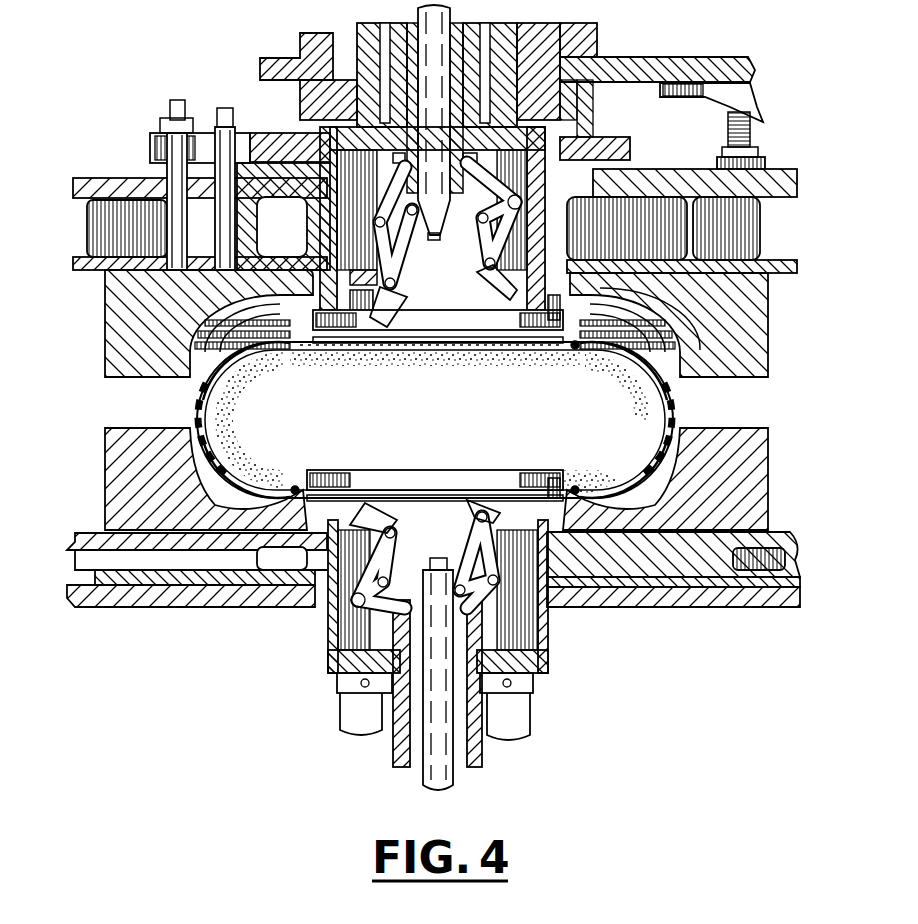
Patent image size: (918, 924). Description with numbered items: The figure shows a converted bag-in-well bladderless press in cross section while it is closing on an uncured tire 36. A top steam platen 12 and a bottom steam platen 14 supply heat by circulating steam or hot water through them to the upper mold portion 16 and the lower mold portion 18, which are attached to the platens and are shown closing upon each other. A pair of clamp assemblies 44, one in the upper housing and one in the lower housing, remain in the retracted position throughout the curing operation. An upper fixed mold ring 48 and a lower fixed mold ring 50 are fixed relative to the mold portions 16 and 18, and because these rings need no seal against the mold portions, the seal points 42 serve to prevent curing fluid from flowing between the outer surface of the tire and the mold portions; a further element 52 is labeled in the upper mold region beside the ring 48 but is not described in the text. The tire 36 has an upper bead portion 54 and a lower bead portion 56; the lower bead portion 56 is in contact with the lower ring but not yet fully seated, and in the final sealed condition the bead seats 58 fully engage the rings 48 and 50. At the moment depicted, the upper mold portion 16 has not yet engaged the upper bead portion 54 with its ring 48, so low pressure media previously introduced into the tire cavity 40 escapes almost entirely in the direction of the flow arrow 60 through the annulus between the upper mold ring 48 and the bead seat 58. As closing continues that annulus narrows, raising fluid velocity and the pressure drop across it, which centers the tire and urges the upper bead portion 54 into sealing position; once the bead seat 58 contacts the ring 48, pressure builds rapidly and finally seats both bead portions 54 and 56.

The top steam platen 12 is at (118, 203).
The bottom steam platen 14 is at (700, 545).
The upper mold portion 16 is at (124, 316).
The lower mold portion 18 is at (114, 461).
The uncured tire 36 is at (650, 392).
The tire cavity 40 is at (600, 420).
The seal points 42 is at (588, 310).
The clamp assemblies 44 is at (450, 240).
The upper fixed mold ring 48 is at (560, 310).
The lower fixed mold ring 50 is at (552, 478).
The mold cavity surface 52 is at (648, 300).
The upper bead portion 54 is at (290, 355).
The lower bead portion 56 is at (278, 490).
The bead seat 58 is at (572, 352).
The flow arrow 60 is at (535, 352).